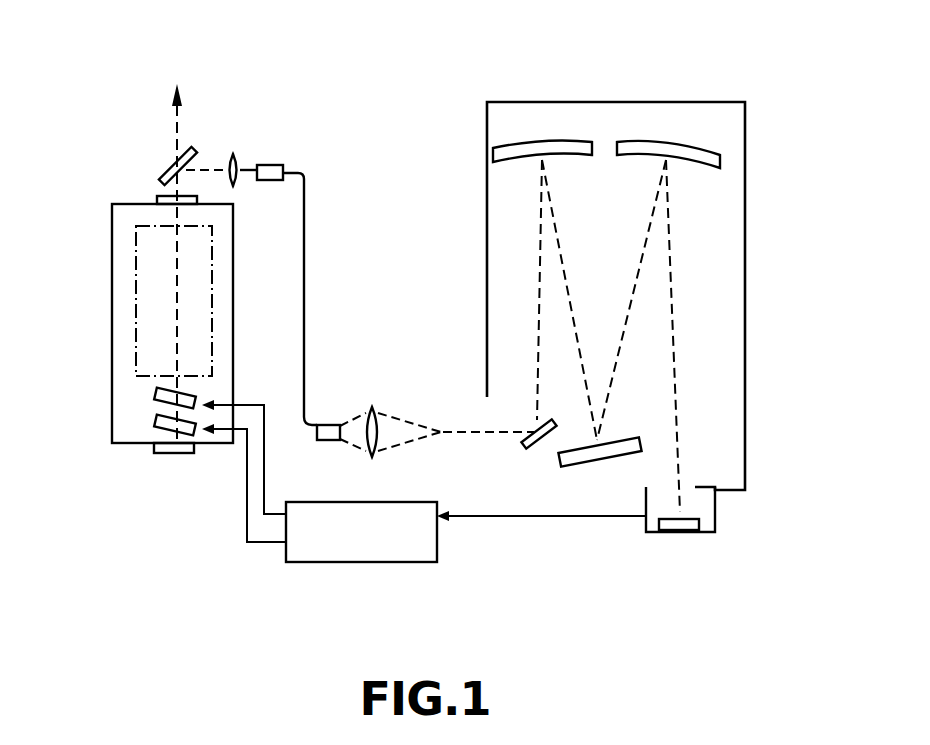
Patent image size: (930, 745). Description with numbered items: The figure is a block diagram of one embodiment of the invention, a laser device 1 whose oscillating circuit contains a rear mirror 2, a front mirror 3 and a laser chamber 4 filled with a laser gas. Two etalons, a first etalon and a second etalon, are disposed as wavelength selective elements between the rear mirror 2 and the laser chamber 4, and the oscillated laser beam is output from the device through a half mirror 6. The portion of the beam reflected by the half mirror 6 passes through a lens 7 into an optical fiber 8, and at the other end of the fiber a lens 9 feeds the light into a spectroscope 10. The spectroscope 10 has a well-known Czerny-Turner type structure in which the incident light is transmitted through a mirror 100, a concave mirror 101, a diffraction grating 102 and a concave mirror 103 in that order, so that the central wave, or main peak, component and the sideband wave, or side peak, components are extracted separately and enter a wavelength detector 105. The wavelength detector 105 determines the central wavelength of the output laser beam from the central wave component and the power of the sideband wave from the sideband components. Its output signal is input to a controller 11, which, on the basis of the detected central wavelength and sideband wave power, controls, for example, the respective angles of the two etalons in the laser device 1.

The laser device 1 is at (112, 312).
The rear mirror 2 is at (175, 453).
The front mirror 3 is at (160, 195).
The laser chamber 4 is at (237, 280).
The half mirror 6 is at (170, 170).
The lens 7 is at (237, 154).
The optical fiber 8 is at (304, 210).
The lens 9 is at (373, 408).
The spectroscope 10 is at (702, 96).
The controller 11 is at (363, 562).
The mirror 100 is at (540, 446).
The concave mirror 101 is at (545, 145).
The diffraction grating 102 is at (592, 464).
The concave mirror 103 is at (713, 150).
The wavelength detector 105 is at (717, 505).